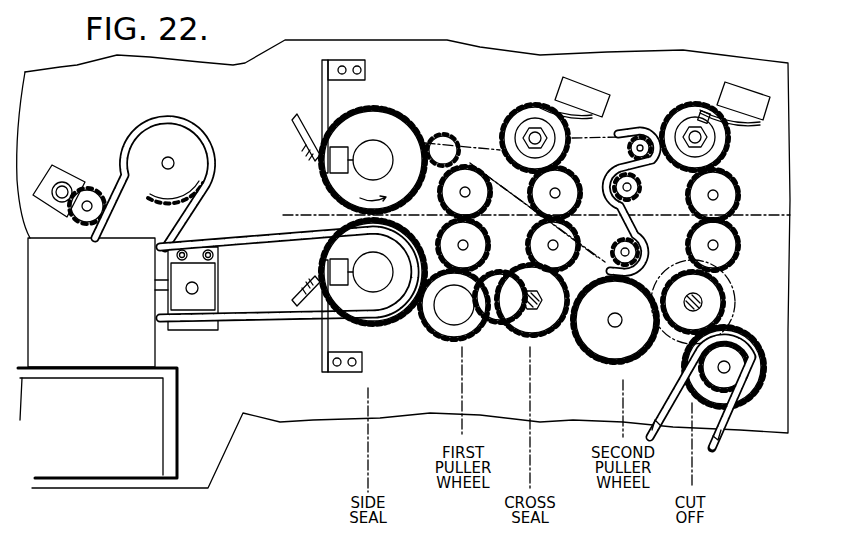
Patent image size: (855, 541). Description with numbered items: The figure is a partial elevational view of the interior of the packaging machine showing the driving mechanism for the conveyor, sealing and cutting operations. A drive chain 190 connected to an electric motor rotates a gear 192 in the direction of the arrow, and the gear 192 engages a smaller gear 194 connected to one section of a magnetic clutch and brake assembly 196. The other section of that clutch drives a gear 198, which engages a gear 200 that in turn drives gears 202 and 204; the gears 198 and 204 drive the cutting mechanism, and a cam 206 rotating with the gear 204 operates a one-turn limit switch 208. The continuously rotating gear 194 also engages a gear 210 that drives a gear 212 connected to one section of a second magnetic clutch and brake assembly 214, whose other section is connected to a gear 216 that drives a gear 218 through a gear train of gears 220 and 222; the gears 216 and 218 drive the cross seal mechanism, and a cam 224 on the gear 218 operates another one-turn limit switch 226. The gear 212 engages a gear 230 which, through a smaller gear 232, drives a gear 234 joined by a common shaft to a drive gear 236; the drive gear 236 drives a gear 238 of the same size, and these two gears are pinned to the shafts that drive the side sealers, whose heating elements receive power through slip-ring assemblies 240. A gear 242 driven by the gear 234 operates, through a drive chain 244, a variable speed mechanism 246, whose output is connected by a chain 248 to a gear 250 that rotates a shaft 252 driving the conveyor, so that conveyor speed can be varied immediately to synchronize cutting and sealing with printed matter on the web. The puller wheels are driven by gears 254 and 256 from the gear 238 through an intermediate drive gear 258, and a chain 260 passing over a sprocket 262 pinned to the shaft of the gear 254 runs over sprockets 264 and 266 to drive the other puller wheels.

The drive chain 190 is at (725, 420).
The gear 192 is at (737, 337).
The smaller gear 194 is at (712, 307).
The magnetic clutch and brake assembly 196 is at (736, 288).
The gear 198 is at (722, 272).
The gear 200 is at (740, 243).
The gear 202 is at (726, 184).
The gear 204 is at (730, 146).
The cam 206 is at (687, 118).
The one-turn limit switch 208 is at (727, 82).
The gear 210 is at (601, 364).
The gear 212 is at (543, 340).
The second magnetic clutch and brake assembly 214 is at (525, 340).
The gear 216 is at (500, 326).
The gear 218 is at (525, 106).
The gear 220 is at (573, 243).
The gear 222 is at (562, 172).
The cam 224 is at (522, 132).
The one-turn limit switch 226 is at (590, 95).
The gear 230 is at (425, 330).
The smaller gear 232 is at (455, 330).
The gear 234 is at (380, 343).
The drive gear 236 is at (340, 325).
The gear 238 is at (364, 112).
The slip-ring assemblies 240 is at (357, 145).
The gear 242 is at (316, 258).
The drive chain 244 is at (250, 240).
The variable speed mechanism 246 is at (165, 349).
The chain 248 is at (118, 176).
The gear 250 is at (178, 135).
The shaft 252 is at (172, 163).
The gear 254 is at (462, 150).
The gear 256 is at (489, 236).
The intermediate drive gear 258 is at (443, 140).
The chain 260 is at (620, 137).
The sprocket 262 is at (486, 186).
The sprocket 264 is at (643, 190).
The sprocket 266 is at (639, 244).